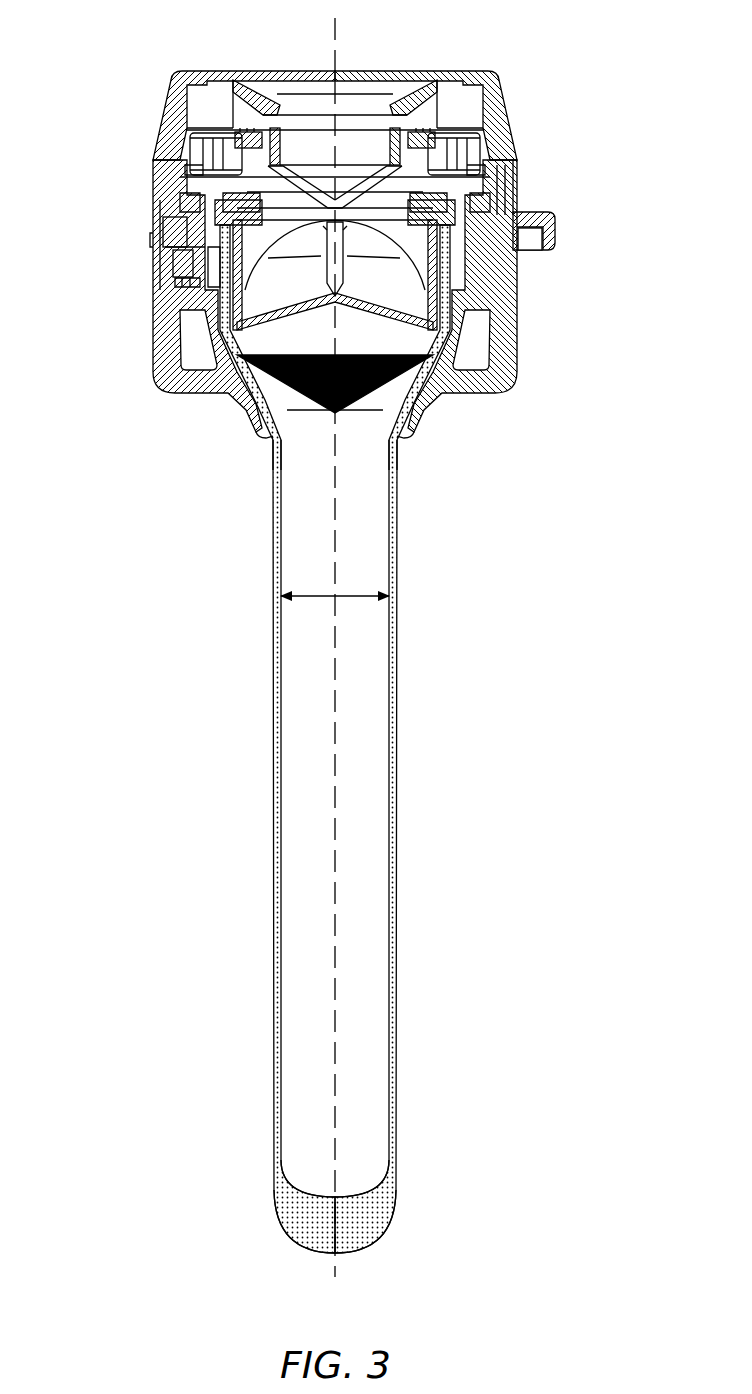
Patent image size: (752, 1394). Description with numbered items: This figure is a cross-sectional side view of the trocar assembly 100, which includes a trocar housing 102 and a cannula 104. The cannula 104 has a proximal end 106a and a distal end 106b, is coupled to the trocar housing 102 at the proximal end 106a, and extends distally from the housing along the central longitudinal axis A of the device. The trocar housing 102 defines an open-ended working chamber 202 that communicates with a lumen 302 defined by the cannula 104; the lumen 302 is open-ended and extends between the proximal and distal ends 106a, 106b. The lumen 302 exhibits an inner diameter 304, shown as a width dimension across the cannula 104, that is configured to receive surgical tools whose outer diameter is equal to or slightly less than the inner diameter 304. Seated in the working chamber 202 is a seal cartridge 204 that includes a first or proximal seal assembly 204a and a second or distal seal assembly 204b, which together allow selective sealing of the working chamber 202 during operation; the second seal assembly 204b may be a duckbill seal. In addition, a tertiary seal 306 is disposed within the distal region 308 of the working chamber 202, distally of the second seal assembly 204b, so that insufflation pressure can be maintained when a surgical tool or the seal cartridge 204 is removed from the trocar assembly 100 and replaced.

The trocar assembly 100 is at (610, 43).
The trocar housing 102 is at (143, 238).
The cannula 104 is at (397, 768).
The proximal end 106a is at (262, 443).
The distal end 106b is at (282, 1223).
The working chamber 202 is at (262, 240).
The seal cartridge 204 is at (532, 157).
The first seal assembly 204a is at (482, 182).
The second seal assembly 204b is at (440, 288).
The lumen 302 is at (368, 667).
The inner diameter 304 is at (350, 592).
The tertiary seal 306 is at (404, 378).
The distal region 308 is at (292, 397).
The longitudinal axis A is at (335, 1265).